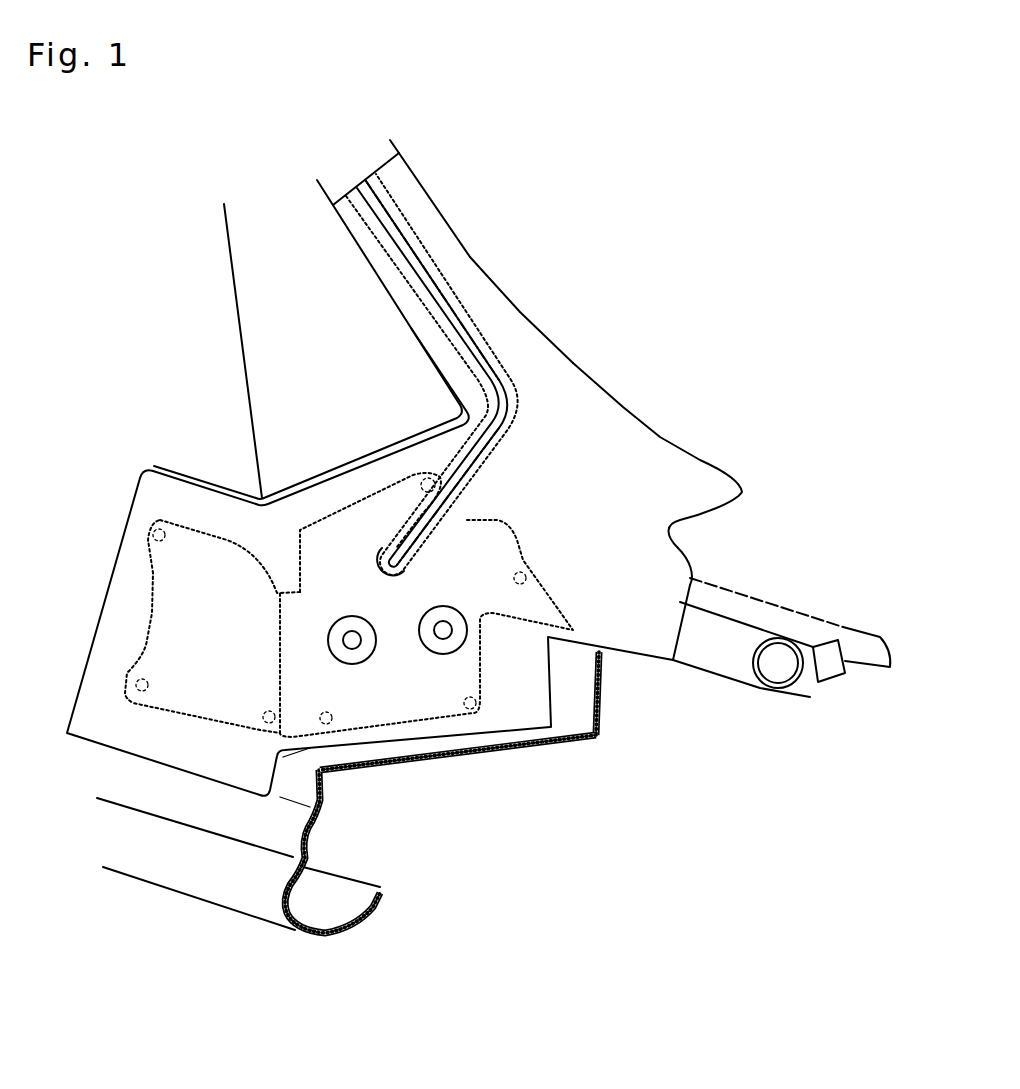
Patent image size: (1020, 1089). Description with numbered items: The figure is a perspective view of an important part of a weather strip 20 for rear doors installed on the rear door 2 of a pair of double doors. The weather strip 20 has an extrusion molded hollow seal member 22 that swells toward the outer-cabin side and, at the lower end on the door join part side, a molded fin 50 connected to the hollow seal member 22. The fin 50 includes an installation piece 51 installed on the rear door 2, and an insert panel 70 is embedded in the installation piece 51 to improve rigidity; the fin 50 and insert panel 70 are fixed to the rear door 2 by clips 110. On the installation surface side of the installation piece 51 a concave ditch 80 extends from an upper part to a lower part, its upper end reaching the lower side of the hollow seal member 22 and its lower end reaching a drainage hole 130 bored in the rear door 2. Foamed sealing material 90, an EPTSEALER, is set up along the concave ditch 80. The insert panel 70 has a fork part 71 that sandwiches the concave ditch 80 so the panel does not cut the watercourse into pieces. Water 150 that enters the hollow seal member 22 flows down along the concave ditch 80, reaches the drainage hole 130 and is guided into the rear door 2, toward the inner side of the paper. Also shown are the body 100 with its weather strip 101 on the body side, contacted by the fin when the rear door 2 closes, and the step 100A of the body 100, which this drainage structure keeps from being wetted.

The rear door 2 is at (204, 334).
The weather strip for rear doors 20 is at (578, 241).
The hollow seal member 22 is at (318, 182).
The fin 50 is at (657, 457).
The installation piece 51 is at (327, 495).
The insert panel 70 is at (150, 593).
The fork part 71 is at (398, 495).
The concave ditch 80 is at (437, 293).
The foamed sealing material 90 is at (480, 490).
The body 100 is at (598, 700).
The step 100A is at (498, 735).
The weather strip on body side 101 is at (767, 610).
The clip 110 is at (353, 641).
The drainage hole 130 is at (393, 583).
The water 150 is at (343, 181).